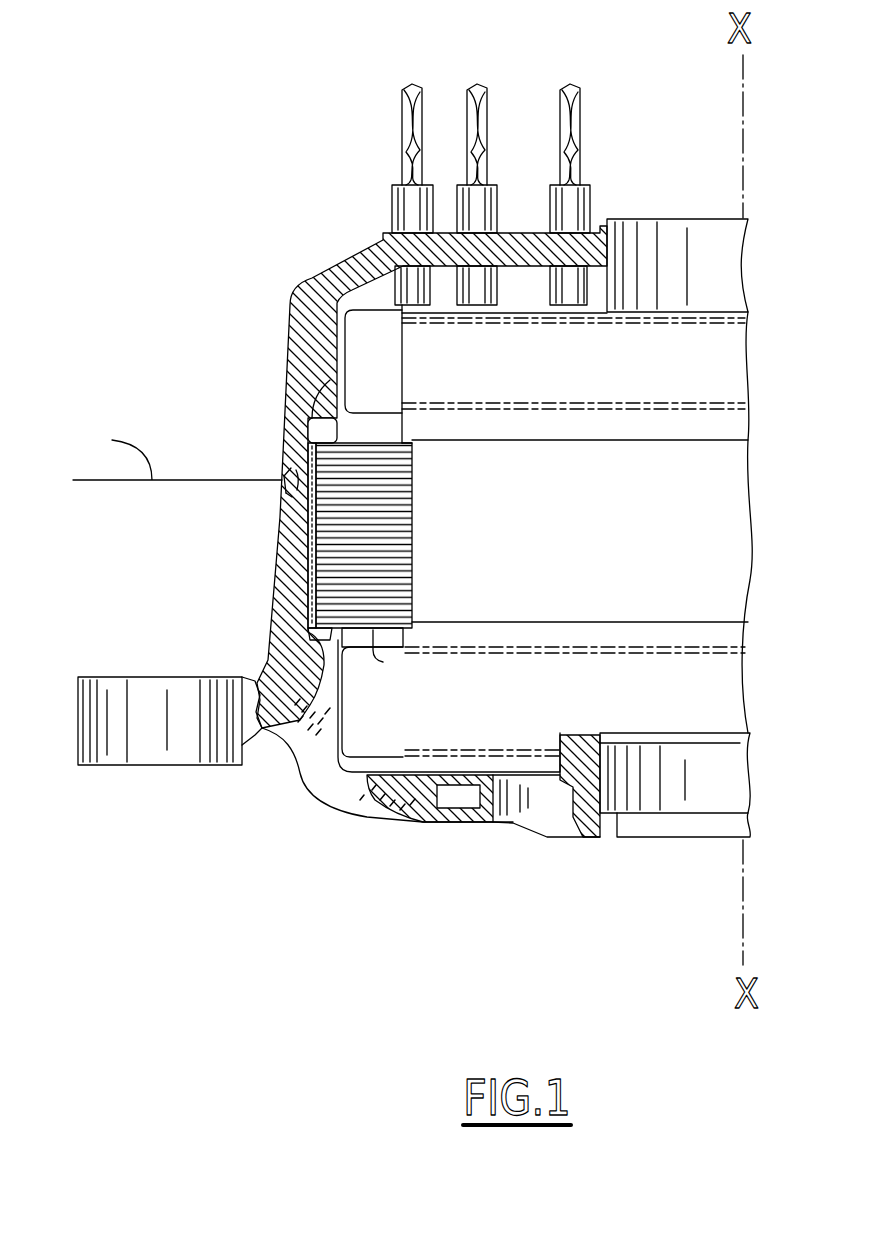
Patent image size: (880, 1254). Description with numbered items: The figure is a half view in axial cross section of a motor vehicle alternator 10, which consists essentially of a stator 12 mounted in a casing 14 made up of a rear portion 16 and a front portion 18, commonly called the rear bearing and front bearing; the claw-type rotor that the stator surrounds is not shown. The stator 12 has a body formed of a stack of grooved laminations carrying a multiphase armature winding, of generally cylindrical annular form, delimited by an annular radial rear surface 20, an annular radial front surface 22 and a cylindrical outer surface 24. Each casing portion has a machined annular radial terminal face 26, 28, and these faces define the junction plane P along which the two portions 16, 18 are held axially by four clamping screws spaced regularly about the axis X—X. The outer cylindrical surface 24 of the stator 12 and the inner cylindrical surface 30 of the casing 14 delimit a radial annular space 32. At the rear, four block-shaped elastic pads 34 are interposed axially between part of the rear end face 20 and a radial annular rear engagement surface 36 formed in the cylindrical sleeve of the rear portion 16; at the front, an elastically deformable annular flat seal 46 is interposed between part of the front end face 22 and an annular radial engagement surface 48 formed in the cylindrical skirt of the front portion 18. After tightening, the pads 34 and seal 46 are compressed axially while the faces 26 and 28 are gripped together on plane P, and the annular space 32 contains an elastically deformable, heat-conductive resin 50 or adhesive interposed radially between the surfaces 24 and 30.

The motor vehicle alternator 10 is at (272, 284).
The stator 12 is at (675, 542).
The casing 14 is at (342, 485).
The rear portion 16 is at (342, 531).
The front portion 18 is at (268, 598).
The rear surface 20 is at (370, 445).
The front surface 22 is at (373, 630).
The cylindrical outer surface 24 is at (300, 455).
The annular radial terminal face 26 is at (277, 497).
The annular radial terminal face 28 is at (283, 470).
The inner cylindrical surface 30 is at (418, 535).
The radial annular space 32 is at (330, 492).
The elastic pads 34 is at (244, 385).
The radial annular rear engagement surface 36 is at (312, 420).
The annular flat seal 46 is at (308, 634).
The annular radial engagement surface 48 is at (322, 643).
The resin 50 is at (280, 573).